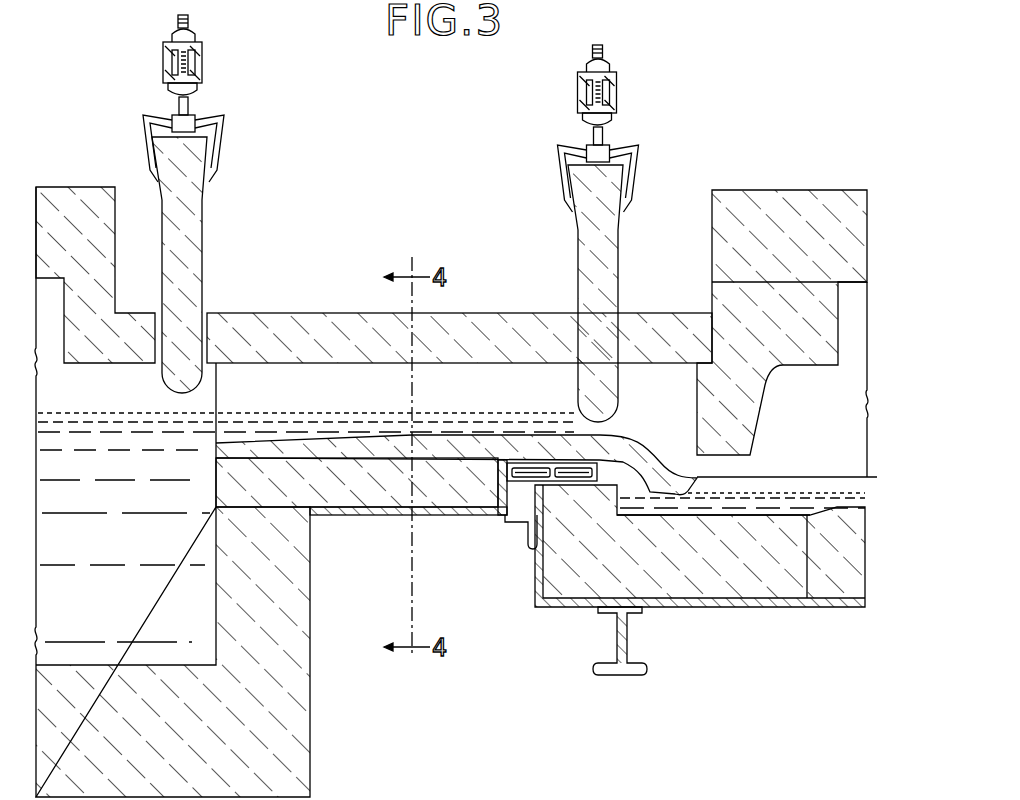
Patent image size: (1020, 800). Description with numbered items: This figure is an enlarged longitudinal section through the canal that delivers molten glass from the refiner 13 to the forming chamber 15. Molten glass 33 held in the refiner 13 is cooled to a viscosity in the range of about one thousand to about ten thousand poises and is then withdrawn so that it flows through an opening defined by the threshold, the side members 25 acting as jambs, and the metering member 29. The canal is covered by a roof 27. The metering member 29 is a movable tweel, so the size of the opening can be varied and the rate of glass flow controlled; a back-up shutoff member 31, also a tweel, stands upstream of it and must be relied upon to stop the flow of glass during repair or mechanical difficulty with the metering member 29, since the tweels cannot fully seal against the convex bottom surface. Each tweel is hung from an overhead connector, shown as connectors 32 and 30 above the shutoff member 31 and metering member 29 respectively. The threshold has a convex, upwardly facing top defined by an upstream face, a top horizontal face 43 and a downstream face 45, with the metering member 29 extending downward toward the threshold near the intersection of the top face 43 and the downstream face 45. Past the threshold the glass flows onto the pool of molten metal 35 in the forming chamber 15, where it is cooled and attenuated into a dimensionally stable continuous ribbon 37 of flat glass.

The refiner 13 is at (78, 183).
The forming chamber 15 is at (797, 182).
The side members 25 is at (617, 420).
The roof 27 is at (283, 313).
The metering member 29 is at (619, 245).
The electrical connector 30 is at (657, 99).
The shutoff member 31 is at (204, 208).
The electrical connector 32 is at (227, 61).
The molten glass 33 is at (133, 604).
The pool of molten metal 35 is at (774, 503).
The continuous sheet or ribbon of flat glass 37 is at (843, 477).
The top horizontal face 43 is at (452, 431).
The downstream face 45 is at (637, 443).